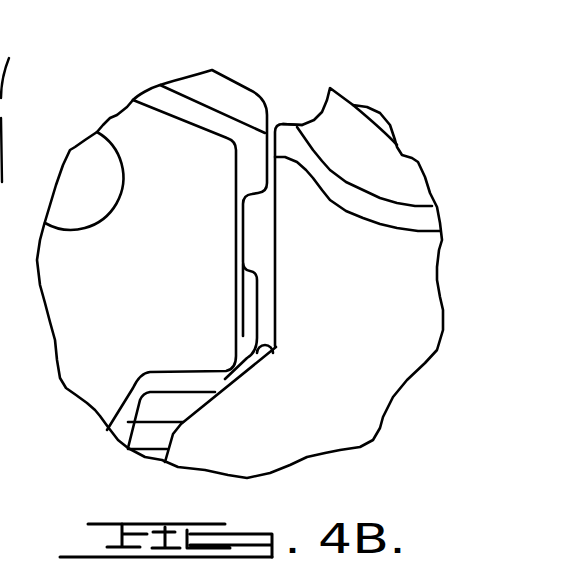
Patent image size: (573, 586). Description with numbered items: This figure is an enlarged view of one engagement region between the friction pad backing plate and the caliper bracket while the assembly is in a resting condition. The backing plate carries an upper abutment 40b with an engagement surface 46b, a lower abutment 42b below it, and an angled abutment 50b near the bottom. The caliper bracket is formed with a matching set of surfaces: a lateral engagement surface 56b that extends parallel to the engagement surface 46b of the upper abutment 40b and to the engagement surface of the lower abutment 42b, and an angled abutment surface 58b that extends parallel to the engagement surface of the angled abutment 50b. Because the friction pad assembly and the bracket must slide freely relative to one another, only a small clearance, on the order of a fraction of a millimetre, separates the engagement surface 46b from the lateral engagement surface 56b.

The upper abutment 40b is at (253, 162).
The engagement surface 46b is at (266, 174).
The lower abutment 42b is at (248, 293).
The angled abutment 50b is at (228, 371).
The lateral engagement surface 56b is at (272, 225).
The angled abutment surface 58b is at (273, 345).